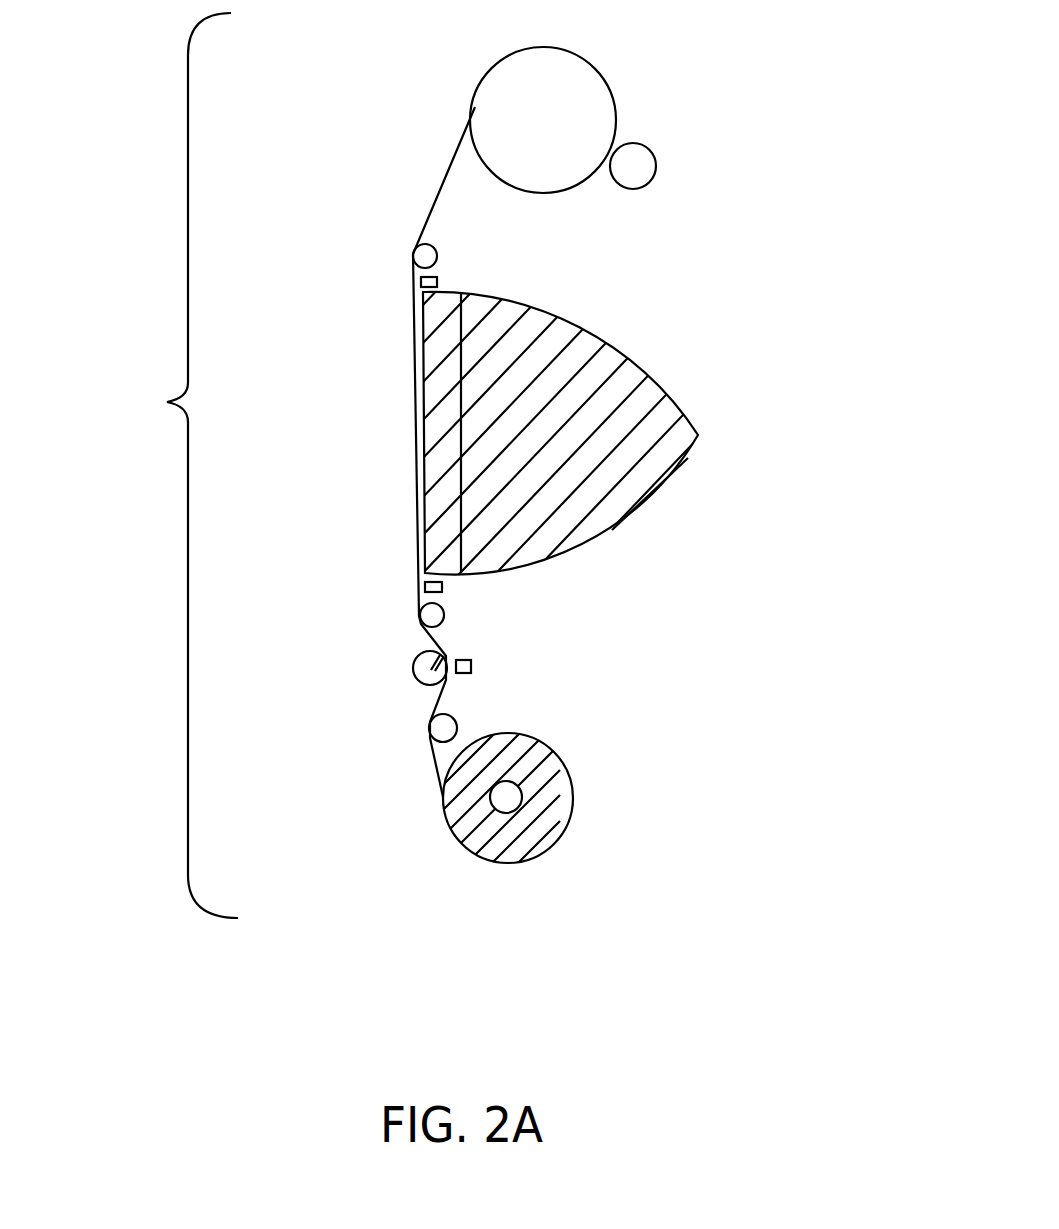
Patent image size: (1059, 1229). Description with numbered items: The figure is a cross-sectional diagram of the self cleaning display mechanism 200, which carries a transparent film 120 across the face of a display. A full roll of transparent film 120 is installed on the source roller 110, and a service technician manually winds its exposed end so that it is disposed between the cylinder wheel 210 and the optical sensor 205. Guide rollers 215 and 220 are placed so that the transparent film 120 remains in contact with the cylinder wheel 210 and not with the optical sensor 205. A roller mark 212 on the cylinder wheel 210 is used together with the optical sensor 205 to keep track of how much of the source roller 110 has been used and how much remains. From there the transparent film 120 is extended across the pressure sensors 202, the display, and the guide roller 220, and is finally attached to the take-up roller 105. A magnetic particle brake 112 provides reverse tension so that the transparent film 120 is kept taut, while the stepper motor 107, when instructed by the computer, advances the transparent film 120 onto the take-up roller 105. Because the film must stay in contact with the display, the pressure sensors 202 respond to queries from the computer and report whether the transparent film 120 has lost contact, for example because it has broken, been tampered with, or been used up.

The self cleaning display mechanism 200 is at (157, 403).
The take-up roller 105 is at (592, 32).
The stepper motor 107 is at (654, 152).
The transparent film 120 is at (452, 157).
The guide roller 220 is at (437, 255).
The pressure sensors 202 is at (421, 283).
The guide roller 215 is at (445, 612).
The cylinder wheel 210 is at (423, 687).
The roller mark 212 is at (417, 662).
The optical sensor 205 is at (472, 665).
The source roller 110 is at (573, 792).
The magnetic particle brake 112 is at (503, 813).